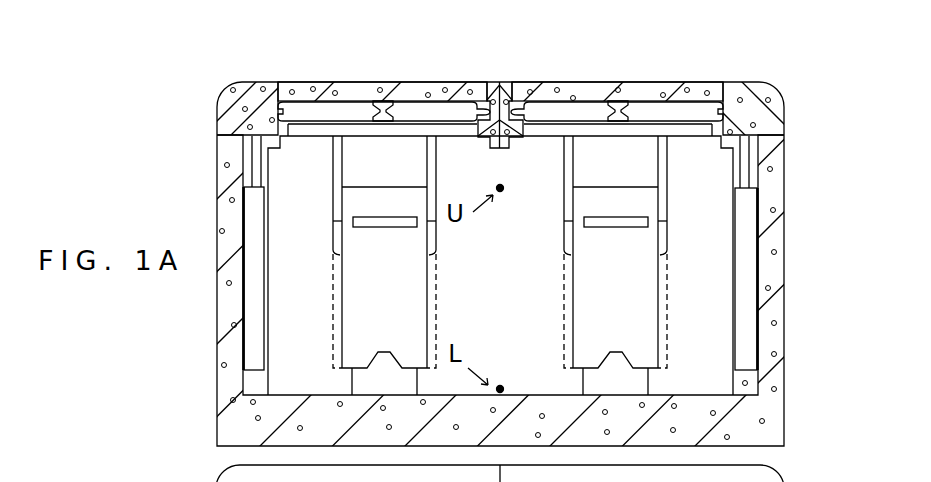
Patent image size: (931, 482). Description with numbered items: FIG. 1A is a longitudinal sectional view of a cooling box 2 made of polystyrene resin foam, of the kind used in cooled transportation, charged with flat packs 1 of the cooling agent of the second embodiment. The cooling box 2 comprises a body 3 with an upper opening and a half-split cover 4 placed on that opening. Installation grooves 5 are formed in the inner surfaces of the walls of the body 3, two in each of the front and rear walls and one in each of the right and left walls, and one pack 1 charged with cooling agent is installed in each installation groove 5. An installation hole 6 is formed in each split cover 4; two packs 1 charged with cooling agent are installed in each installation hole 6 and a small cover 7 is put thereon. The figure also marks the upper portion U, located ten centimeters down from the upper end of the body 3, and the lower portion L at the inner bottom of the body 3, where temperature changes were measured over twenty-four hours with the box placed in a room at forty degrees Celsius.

The flat pack 1 is at (324, 112).
The cooling box 2 is at (840, 123).
The body 3 is at (775, 188).
The half-split cover 4 is at (225, 115).
The installation groove 5 is at (250, 301).
The installation hole 6 is at (482, 104).
The small cover 7 is at (375, 90).